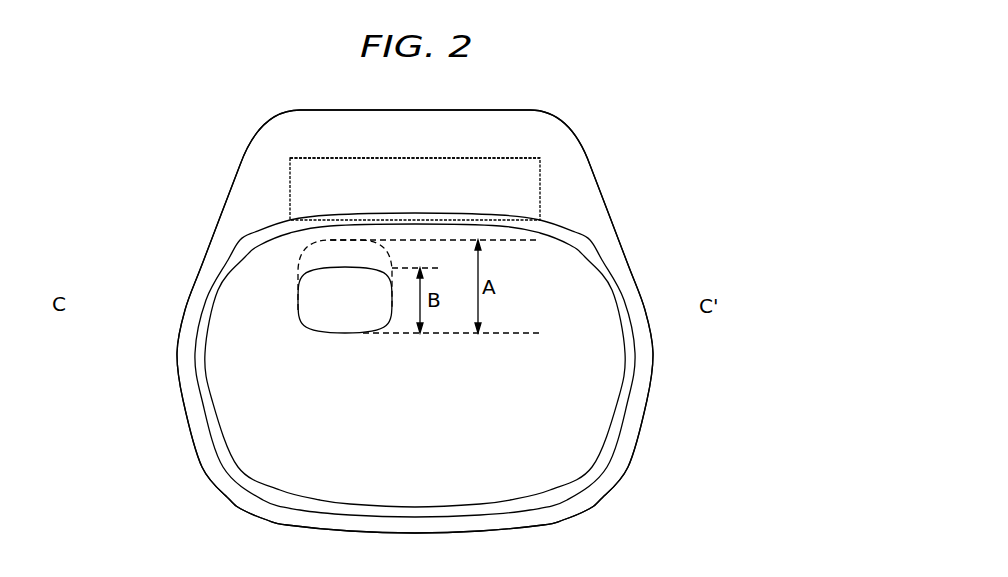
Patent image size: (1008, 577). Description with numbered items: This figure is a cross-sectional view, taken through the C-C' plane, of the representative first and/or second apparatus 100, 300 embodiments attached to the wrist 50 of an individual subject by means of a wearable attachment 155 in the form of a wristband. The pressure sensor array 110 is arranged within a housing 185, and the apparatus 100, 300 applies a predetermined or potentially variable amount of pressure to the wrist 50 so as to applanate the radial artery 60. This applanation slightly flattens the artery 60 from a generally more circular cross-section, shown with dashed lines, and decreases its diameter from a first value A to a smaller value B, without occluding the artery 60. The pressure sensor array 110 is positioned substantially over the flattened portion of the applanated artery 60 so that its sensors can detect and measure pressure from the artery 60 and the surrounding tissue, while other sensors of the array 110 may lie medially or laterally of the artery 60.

The first apparatus 100 is at (585, 202).
The second apparatus 300 is at (415, 321).
The pressure sensor array 110 is at (310, 191).
The housing 185 is at (512, 157).
The wearable attachment 155 is at (197, 440).
The wrist 50 is at (603, 390).
The radial artery 60 is at (320, 308).